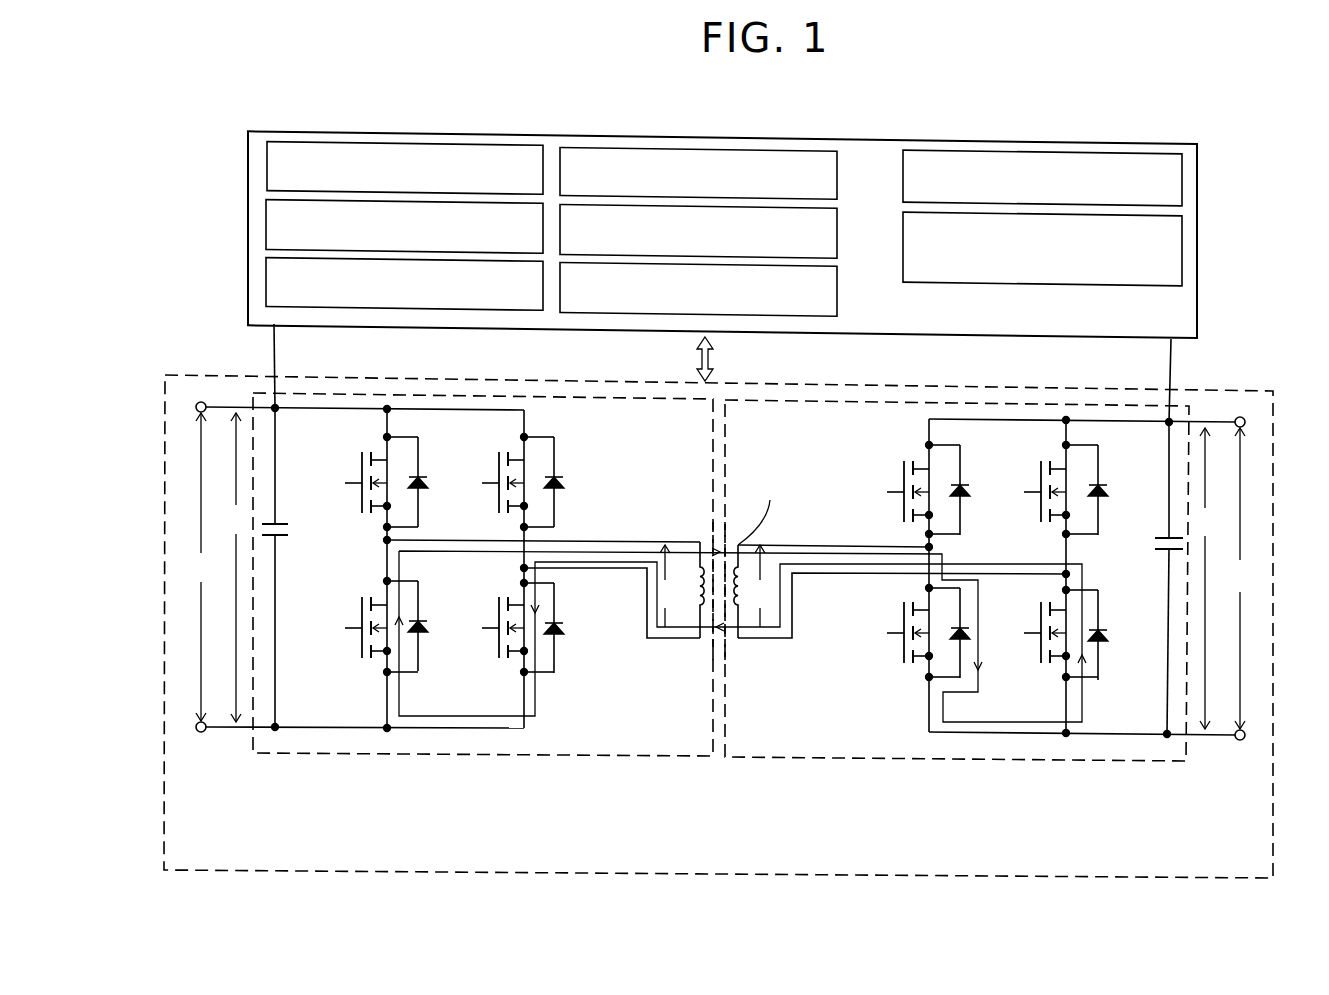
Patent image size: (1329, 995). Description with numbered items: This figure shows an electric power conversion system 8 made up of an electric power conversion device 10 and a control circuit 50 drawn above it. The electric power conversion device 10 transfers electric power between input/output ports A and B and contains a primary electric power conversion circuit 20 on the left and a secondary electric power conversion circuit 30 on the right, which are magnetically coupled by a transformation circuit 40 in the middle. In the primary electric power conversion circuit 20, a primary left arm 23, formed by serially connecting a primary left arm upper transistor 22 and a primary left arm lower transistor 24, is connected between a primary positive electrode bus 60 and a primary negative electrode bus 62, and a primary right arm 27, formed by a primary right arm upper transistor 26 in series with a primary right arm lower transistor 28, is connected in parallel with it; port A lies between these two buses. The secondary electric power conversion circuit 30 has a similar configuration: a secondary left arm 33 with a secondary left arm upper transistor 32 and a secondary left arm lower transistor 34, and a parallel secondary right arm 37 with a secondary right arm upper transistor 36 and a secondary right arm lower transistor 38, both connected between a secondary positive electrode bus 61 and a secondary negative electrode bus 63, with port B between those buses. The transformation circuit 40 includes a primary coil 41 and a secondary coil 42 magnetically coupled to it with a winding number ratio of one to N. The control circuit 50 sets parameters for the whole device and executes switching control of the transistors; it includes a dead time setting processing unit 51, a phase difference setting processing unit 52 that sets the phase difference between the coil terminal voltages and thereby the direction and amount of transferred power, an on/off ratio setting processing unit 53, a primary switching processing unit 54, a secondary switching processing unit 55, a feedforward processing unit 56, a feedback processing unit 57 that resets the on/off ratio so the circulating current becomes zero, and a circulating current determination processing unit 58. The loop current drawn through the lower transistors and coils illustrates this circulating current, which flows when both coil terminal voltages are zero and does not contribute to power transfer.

The electric power conversion system 8 is at (1180, 126).
The electric power conversion device 10 is at (1275, 493).
The primary electric power conversion circuit 20 is at (685, 757).
The primary left arm upper transistor 22 is at (362, 514).
The primary left arm 23 is at (362, 616).
The primary left arm lower transistor 24 is at (364, 663).
The primary right arm upper transistor 26 is at (498, 514).
The primary right arm 27 is at (513, 617).
The primary right arm lower transistor 28 is at (503, 663).
The secondary electric power conversion circuit 30 is at (1160, 762).
The secondary left arm upper transistor 32 is at (906, 522).
The secondary left arm 33 is at (916, 628).
The secondary left arm lower transistor 34 is at (906, 664).
The secondary right arm upper transistor 36 is at (1040, 522).
The secondary right arm 37 is at (1044, 629).
The secondary right arm lower transistor 38 is at (1040, 664).
The transformation circuit 40 is at (691, 627).
The primary coil 41 is at (700, 588).
The secondary coil 42 is at (735, 585).
The control circuit 50 is at (1198, 306).
The dead time setting processing unit 51 is at (267, 161).
The phase difference setting processing unit 52 is at (266, 222).
The on/off ratio setting processing unit 53 is at (266, 276).
The primary switching processing unit 54 is at (837, 167).
The secondary switching processing unit 55 is at (837, 219).
The feedforward processing unit 56 is at (837, 277).
The feedback processing unit 57 is at (1125, 137).
The circulating current determination processing unit 58 is at (1118, 270).
The primary positive electrode bus 60 is at (375, 408).
The secondary positive electrode bus 61 is at (1133, 419).
The primary negative electrode bus 62 is at (433, 729).
The secondary negative electrode bus 63 is at (1117, 737).